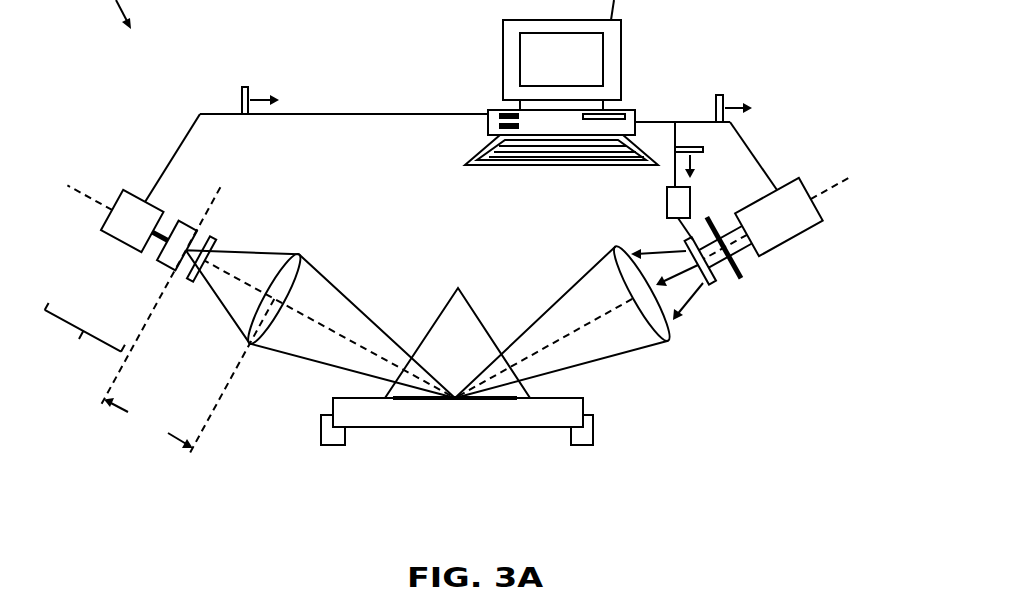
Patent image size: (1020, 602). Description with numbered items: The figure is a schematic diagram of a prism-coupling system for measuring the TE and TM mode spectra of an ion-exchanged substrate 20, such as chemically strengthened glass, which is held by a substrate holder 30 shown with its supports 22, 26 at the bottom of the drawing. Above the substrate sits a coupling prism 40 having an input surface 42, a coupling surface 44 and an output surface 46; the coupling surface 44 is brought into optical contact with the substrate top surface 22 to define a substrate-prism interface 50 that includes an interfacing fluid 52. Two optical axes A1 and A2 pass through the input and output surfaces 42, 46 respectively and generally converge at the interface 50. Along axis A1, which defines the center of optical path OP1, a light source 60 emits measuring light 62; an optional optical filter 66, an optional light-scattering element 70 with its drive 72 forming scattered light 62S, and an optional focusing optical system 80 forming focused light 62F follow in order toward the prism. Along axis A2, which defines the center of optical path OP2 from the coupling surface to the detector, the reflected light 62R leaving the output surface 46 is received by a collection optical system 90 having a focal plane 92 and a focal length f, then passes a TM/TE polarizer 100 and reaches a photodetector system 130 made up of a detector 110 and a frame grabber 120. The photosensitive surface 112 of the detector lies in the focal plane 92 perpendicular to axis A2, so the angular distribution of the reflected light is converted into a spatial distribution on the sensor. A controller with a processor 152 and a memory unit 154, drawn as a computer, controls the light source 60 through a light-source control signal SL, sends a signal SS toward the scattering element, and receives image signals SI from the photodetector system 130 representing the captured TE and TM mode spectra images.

The ion-exchanged substrate 20 is at (427, 436).
The substrate top surface 22 is at (360, 388).
The stage support 26 is at (555, 418).
The substrate holder 30 is at (323, 433).
The coupling prism 40 is at (429, 249).
The input surface 42 is at (468, 300).
The coupling surface 44 is at (532, 402).
The output surface 46 is at (448, 298).
The substrate-prism interface 50 is at (495, 409).
The interfacing fluid 52 is at (400, 400).
The light source 60 is at (780, 188).
The measuring light 62 is at (752, 247).
The scattered light 62S is at (693, 309).
The focused measuring light 62F is at (623, 352).
The reflected light 62R is at (340, 364).
The optical filter 66 is at (742, 281).
The light-scattering element 70 is at (712, 284).
The actuator 72 is at (667, 203).
The focusing optical system 80 is at (668, 342).
The collection optical system 90 is at (298, 253).
The focal plane 92 is at (212, 196).
The TM/TE polarizer 100 is at (211, 237).
The detector 110 is at (174, 272).
The photosensitive surface 112 is at (189, 283).
The frame grabber 120 is at (118, 241).
The photodetector system 130 is at (83, 342).
The processor 152 is at (492, 115).
The memory unit 154 is at (497, 125).
The optical axis A1 is at (833, 181).
The optical axis A2 is at (69, 186).
The optical path OP1 is at (567, 252).
The optical path OP2 is at (343, 250).
The image signals SI is at (242, 88).
The light-source control signal SL is at (723, 95).
The modulator signal SS is at (705, 150).
The focal length f is at (189, 376).